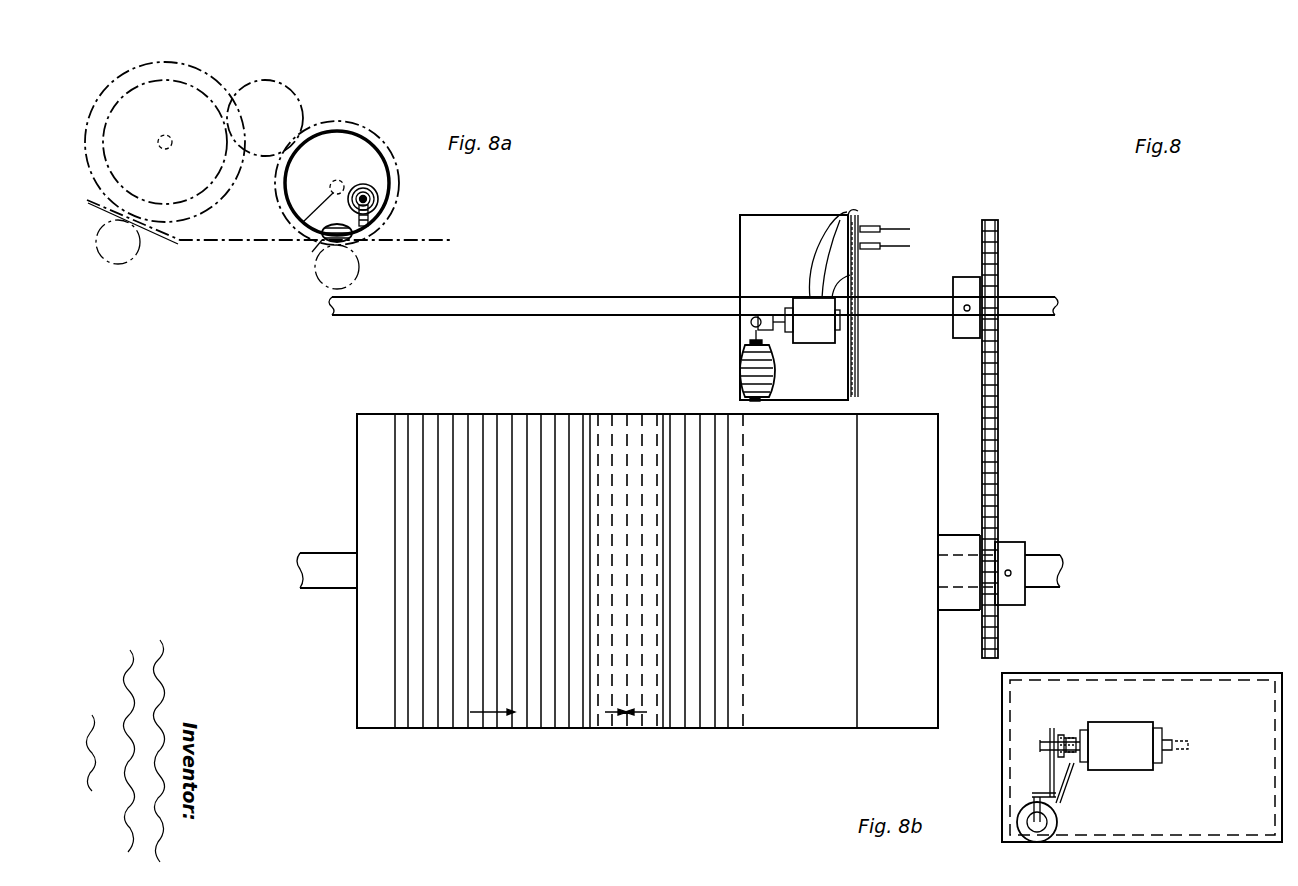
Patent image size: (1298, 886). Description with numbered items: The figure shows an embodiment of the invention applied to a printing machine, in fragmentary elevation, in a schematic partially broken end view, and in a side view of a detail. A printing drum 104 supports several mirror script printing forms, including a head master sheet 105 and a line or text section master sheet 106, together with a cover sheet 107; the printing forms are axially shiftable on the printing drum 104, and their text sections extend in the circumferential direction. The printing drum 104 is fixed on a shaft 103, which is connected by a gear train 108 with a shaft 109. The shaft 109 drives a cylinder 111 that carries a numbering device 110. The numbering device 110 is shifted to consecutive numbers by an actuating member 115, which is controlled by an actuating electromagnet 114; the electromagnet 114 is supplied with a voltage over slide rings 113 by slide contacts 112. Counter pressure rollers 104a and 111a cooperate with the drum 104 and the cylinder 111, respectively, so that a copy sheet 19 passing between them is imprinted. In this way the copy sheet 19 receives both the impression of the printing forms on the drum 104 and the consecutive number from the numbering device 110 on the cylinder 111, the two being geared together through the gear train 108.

In FIG. 8A, the copy sheet 19 is at (190, 245).
In FIG. 8A, the shaft 103 is at (171, 138).
In FIG. 8, the shaft 103 is at (1040, 563).
In FIG. 8A, the printing drum 104 is at (216, 80).
In FIG. 8, the printing drum 104 is at (917, 700).
In FIG. 8A, the counter pressure roller 104a is at (128, 262).
In FIG. 8, the head master sheet 105 is at (808, 698).
In FIG. 8, the line or text section master sheet 106 is at (528, 695).
In FIG. 8, the cover sheet 107 is at (632, 718).
In FIG. 8A, the gear train 108 is at (292, 92).
In FIG. 8, the gear train 108 is at (997, 453).
In FIG. 8A, the shaft 109 is at (342, 181).
In FIG. 8, the shaft 109 is at (1030, 307).
In FIG. 8A, the numbering device 110 is at (318, 246).
In FIG. 8, the numbering device 110 is at (743, 367).
In FIG. 8B, the numbering device 110 is at (1038, 838).
In FIG. 8A, the cylinder 111 is at (368, 152).
In FIG. 8, the cylinder 111 is at (757, 257).
In FIG. 8B, the cylinder 111 is at (1173, 690).
In FIG. 8A, the counter pressure roller 111a is at (361, 267).
In FIG. 8, the slide contacts 112 is at (873, 223).
In FIG. 8, the slide rings 113 is at (862, 227).
In FIG. 8A, the actuating electromagnet 114 is at (378, 196).
In FIG. 8, the actuating electromagnet 114 is at (810, 310).
In FIG. 8B, the actuating electromagnet 114 is at (1107, 728).
In FIG. 8A, the actuating member 115 is at (372, 216).
In FIG. 8, the actuating member 115 is at (753, 327).
In FIG. 8B, the actuating member 115 is at (1062, 673).